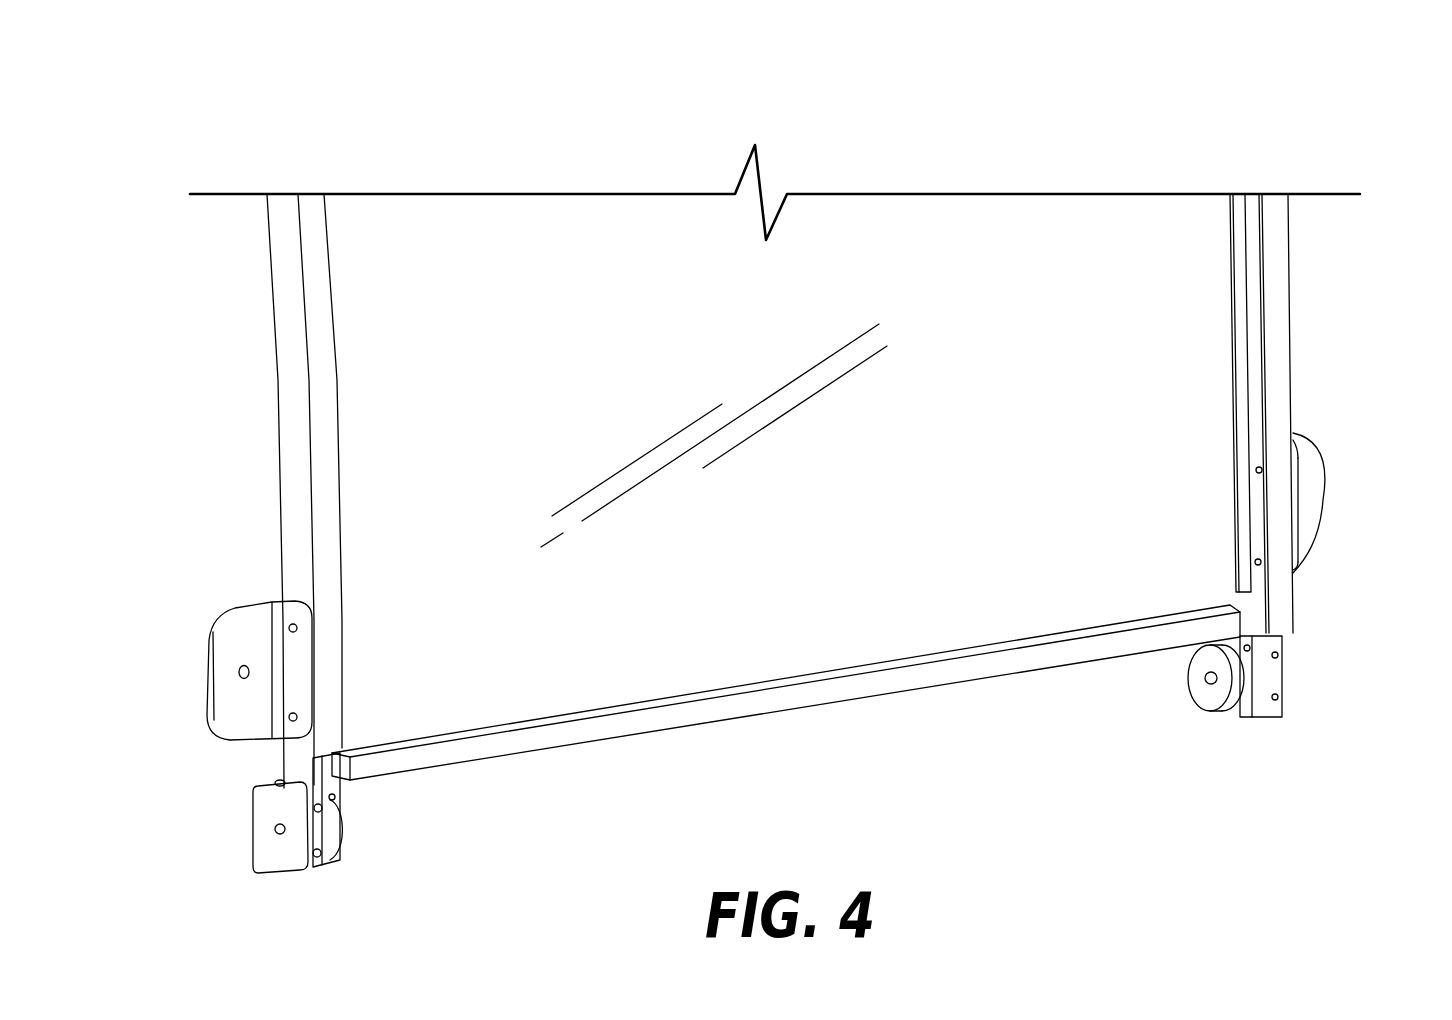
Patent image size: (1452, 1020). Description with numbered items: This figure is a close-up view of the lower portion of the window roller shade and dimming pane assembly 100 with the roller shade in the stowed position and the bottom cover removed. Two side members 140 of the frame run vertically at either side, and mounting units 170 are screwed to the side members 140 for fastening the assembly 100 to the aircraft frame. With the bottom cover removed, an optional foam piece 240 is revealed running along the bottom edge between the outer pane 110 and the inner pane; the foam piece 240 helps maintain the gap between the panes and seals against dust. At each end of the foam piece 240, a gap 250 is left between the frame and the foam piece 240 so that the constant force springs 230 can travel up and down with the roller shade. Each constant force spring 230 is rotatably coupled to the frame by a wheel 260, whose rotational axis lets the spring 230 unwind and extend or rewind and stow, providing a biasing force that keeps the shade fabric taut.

The window roller shade and dimming pane assembly 100 is at (190, 172).
The outer pane 110 is at (1175, 582).
The side members 140 is at (300, 427).
The mounting units 170 is at (232, 714).
The constant force springs 230 is at (334, 797).
The foam piece 240 is at (812, 698).
The gaps 250 is at (345, 746).
The wheels 260 is at (320, 853).